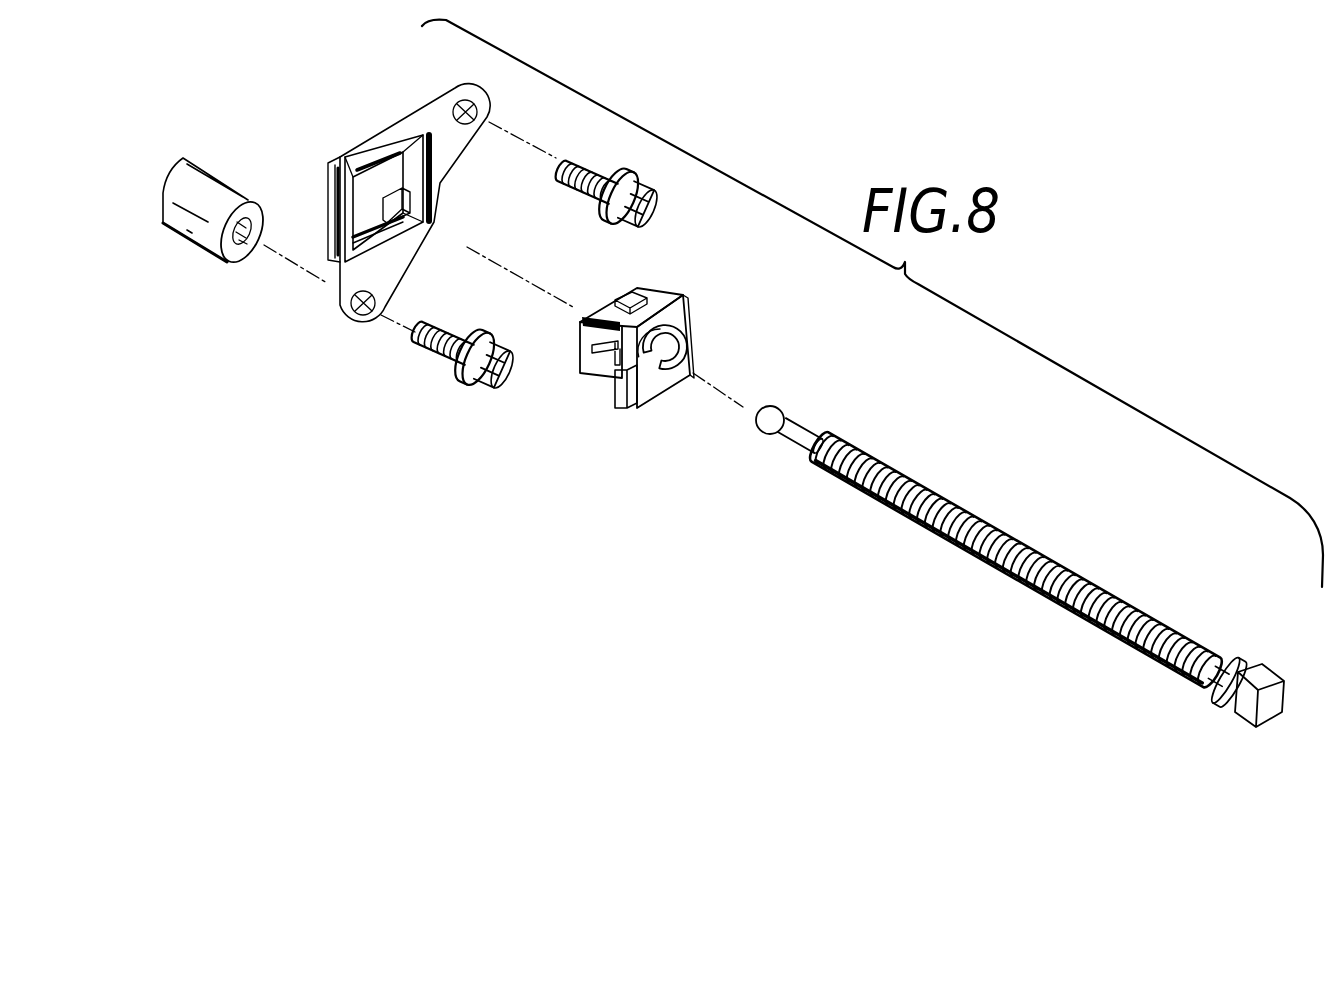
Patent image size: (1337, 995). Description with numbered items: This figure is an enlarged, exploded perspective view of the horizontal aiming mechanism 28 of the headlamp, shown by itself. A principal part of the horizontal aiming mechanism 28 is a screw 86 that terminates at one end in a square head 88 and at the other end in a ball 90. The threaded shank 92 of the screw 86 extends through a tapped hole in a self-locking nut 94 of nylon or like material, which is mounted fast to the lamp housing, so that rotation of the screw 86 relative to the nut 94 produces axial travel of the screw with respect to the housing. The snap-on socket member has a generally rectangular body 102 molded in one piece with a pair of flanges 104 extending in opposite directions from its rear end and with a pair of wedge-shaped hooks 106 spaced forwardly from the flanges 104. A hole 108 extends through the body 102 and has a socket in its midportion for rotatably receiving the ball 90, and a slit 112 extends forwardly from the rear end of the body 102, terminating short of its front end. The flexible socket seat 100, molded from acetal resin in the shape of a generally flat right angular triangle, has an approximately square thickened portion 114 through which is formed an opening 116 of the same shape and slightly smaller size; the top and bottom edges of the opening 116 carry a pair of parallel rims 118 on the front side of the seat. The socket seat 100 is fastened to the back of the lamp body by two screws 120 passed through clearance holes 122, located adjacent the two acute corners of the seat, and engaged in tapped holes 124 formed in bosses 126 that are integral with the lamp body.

The horizontal aiming mechanism 28 is at (1002, 541).
The screw 86 is at (916, 468).
The square head 88 is at (1262, 681).
The ball 90 is at (781, 406).
The threaded shank 92 is at (1058, 546).
The self-locking nut 94 is at (639, 361).
The flexible socket seat 100 is at (435, 208).
The body 102 is at (583, 382).
The flanges 104 is at (690, 307).
The wedge-shaped hooks 106 is at (640, 298).
The hole 108 is at (668, 390).
The slit 112 is at (610, 400).
The thickened portion 114 is at (412, 172).
The opening 116 is at (378, 195).
The rims 118 is at (392, 157).
The screws 120 is at (648, 209).
The clearance holes 122 is at (478, 117).
The tapped holes 124 is at (246, 246).
The bosses 126 is at (192, 238).